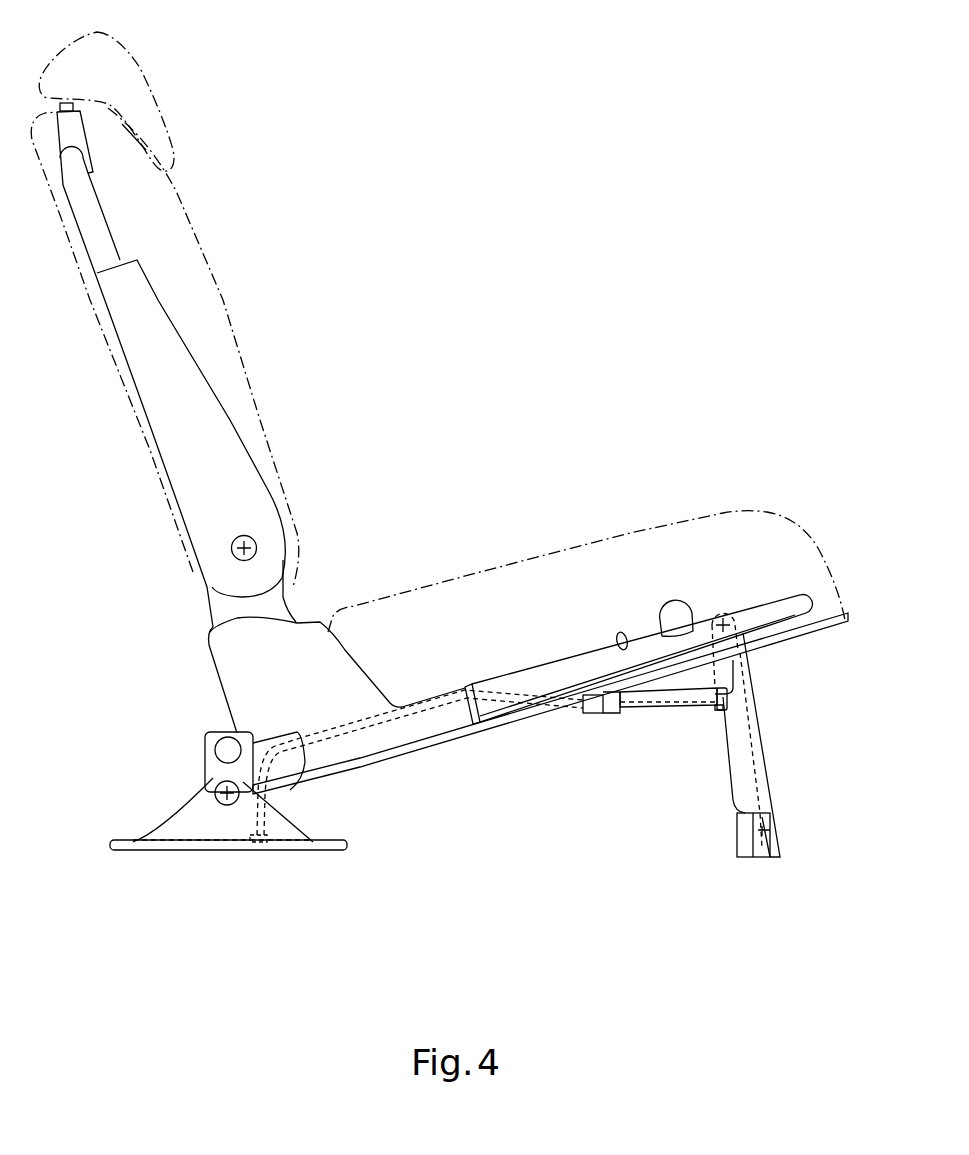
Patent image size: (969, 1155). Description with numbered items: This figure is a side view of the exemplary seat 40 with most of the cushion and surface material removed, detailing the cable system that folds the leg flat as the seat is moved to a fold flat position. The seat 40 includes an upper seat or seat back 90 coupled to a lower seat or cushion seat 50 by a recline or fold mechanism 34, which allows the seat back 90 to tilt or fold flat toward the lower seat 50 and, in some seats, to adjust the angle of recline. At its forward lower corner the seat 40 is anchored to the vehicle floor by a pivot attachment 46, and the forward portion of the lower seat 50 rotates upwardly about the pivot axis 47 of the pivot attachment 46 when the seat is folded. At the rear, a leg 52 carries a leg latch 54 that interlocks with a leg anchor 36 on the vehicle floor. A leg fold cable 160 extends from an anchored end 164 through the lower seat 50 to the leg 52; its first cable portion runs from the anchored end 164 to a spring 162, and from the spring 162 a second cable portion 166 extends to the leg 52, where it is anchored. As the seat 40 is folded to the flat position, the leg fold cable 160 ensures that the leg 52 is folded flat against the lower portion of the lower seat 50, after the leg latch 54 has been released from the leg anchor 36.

The upper seat or seat back 90 is at (256, 212).
The seat 40 is at (491, 208).
The lower seat or cushion seat 50 is at (619, 500).
The recline or fold mechanism 34 is at (235, 558).
The pivot axis 47 is at (214, 783).
The pivot attachment 46 is at (202, 825).
The anchored end 164 is at (263, 847).
The leg fold cable 160 is at (576, 724).
The spring 162 is at (597, 717).
The second cable portion 166 is at (717, 710).
The leg 52 is at (771, 792).
The leg latch 54 is at (766, 830).
The leg anchor 36 is at (753, 853).